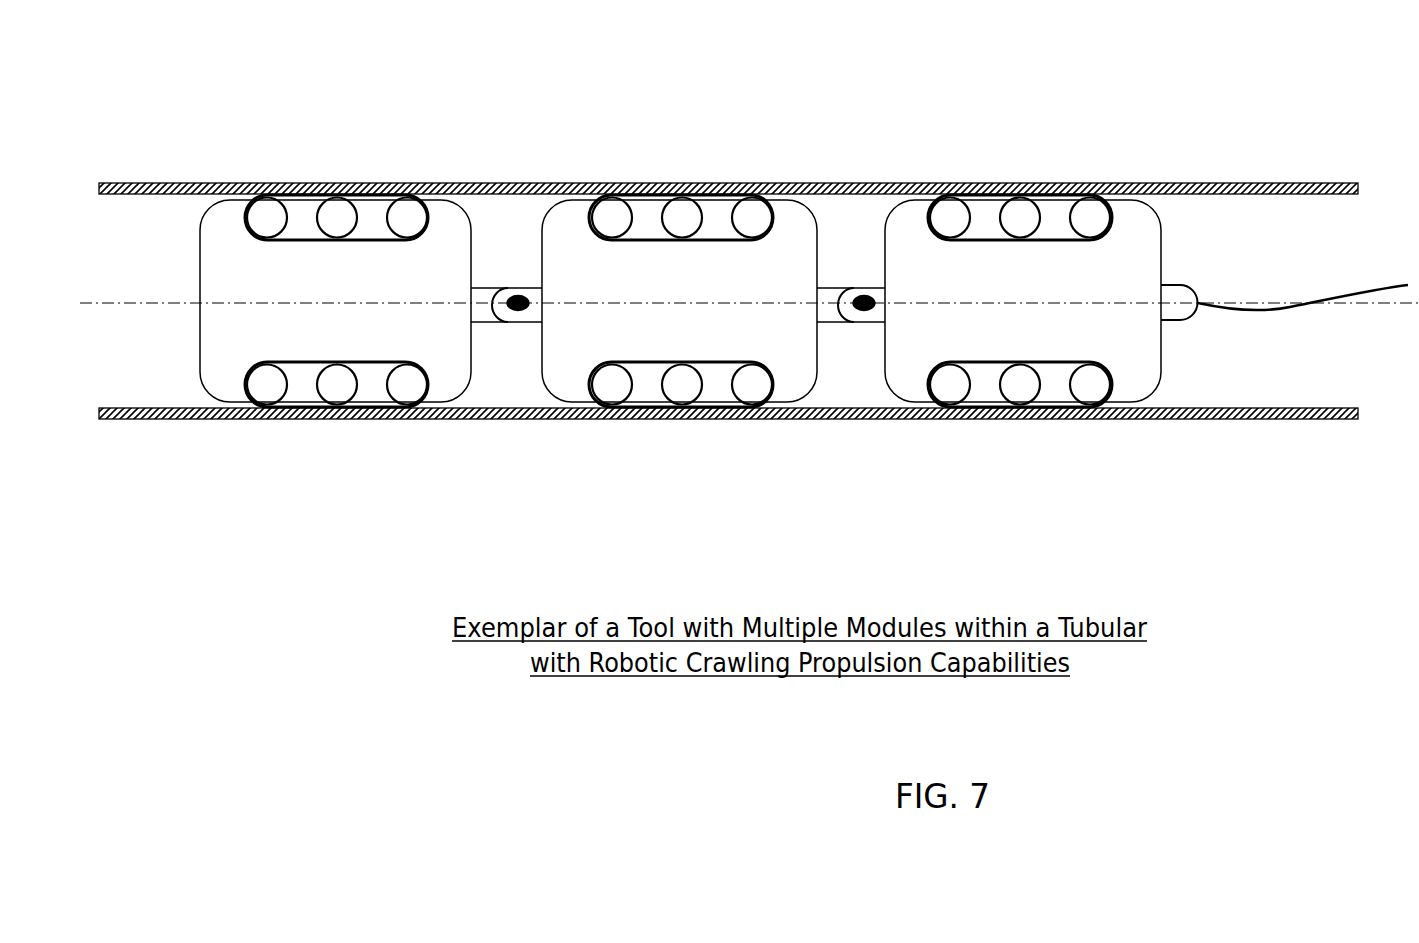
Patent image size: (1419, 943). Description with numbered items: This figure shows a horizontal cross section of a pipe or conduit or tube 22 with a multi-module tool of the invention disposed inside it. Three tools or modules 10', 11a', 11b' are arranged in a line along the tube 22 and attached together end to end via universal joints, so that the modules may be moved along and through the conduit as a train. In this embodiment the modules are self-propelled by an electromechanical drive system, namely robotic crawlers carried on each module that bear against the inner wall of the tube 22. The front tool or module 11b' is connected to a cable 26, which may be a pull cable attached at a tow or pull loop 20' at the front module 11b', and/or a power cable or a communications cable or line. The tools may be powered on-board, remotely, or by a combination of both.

The tool or module 10' is at (299, 375).
The tool or module 11a' is at (651, 376).
The front tool or module 11b' is at (991, 366).
The tow or pull loop 20' is at (1166, 415).
The conduit or tube 22 is at (1262, 182).
The cable 26 is at (1285, 309).